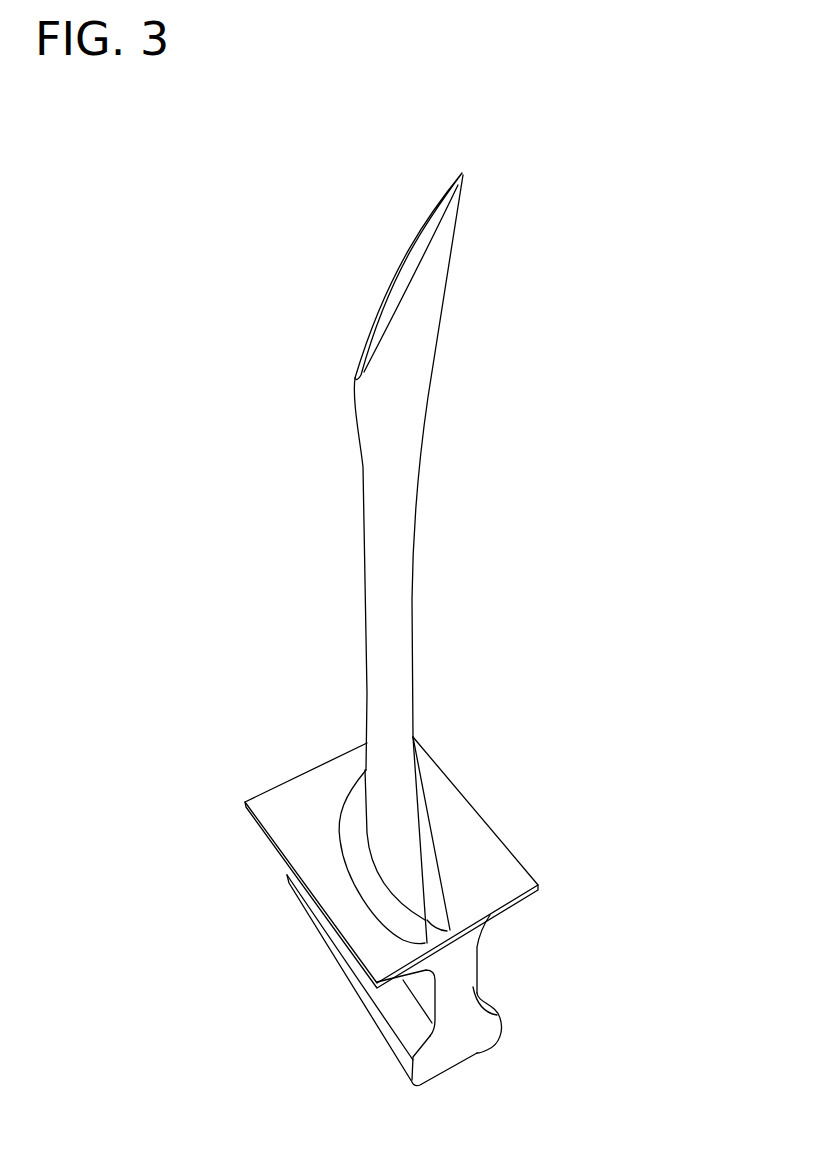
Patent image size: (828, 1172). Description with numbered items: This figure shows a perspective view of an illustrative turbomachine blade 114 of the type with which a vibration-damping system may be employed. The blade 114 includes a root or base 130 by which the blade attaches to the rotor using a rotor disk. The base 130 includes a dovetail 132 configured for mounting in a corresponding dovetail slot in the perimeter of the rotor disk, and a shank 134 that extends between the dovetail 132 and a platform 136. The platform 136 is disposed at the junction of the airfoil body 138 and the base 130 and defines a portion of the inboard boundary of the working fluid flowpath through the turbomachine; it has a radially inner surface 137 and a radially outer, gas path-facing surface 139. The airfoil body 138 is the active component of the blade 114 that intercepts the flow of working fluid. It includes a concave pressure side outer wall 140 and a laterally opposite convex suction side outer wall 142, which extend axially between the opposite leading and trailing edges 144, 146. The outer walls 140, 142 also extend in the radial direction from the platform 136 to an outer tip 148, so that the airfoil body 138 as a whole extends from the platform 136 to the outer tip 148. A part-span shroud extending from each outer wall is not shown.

The blade 114 is at (476, 614).
The root or base 130 is at (497, 980).
The dovetail 132 is at (499, 1033).
The shank 134 is at (457, 982).
The platform 136 is at (449, 862).
The radially inner surface 137 is at (510, 870).
The airfoil body 138 is at (390, 695).
The radially outer surface 139 is at (480, 852).
The pressure side outer wall 140 is at (405, 543).
The suction side outer wall 142 is at (377, 295).
The leading edge 144 is at (365, 463).
The trailing edge 146 is at (427, 412).
The outer tip 148 is at (427, 243).